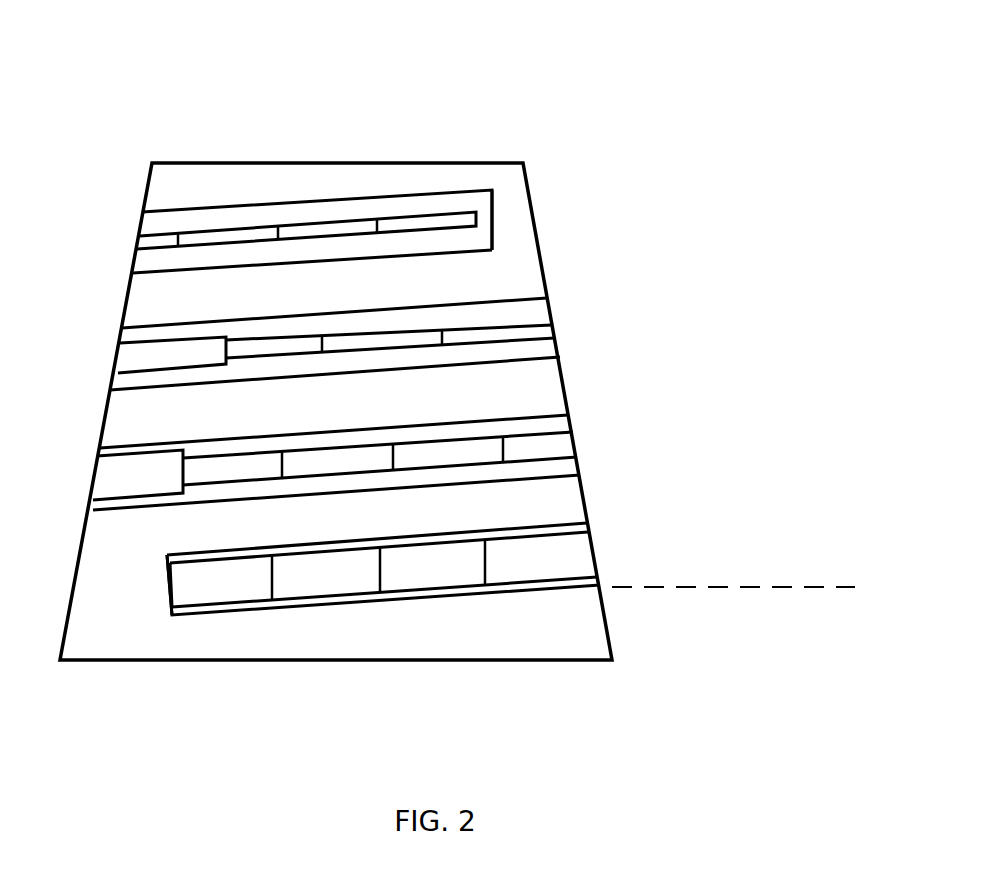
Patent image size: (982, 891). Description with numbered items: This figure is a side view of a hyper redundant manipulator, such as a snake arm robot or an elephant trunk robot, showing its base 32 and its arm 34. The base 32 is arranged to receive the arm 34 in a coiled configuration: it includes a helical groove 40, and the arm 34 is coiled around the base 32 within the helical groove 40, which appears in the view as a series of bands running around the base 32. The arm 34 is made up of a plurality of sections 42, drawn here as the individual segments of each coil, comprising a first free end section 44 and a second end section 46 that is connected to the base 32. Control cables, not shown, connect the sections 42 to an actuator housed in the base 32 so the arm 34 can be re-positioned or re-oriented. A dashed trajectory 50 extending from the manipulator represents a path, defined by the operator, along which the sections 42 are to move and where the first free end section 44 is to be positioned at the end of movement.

The base 32 is at (370, 100).
The arm 34 is at (442, 213).
The helical groove 40 is at (170, 273).
The sections 42 is at (405, 228).
The first free end section 44 is at (500, 251).
The second end section 46 is at (193, 598).
The trajectory 50 is at (727, 590).